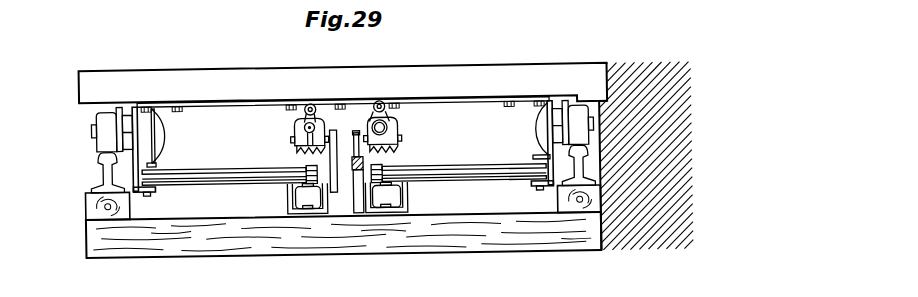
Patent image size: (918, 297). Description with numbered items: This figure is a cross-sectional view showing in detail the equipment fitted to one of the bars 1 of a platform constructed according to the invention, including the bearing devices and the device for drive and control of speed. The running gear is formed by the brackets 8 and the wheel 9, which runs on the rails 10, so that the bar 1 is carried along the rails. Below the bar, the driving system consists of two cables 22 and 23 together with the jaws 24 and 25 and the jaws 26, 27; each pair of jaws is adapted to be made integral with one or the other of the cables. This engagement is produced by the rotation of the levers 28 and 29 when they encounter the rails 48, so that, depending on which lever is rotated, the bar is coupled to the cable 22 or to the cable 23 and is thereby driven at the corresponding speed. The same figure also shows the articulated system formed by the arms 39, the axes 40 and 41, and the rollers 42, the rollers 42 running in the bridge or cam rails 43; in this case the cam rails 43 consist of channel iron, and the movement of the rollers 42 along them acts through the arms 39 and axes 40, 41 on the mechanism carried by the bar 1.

The bar 1 is at (547, 75).
The bracket 8 is at (152, 114).
The wheel 9 is at (103, 125).
The rail 10 is at (100, 158).
The cable 22 is at (308, 124).
The cable 23 is at (395, 129).
The jaw 24 is at (302, 136).
The jaw 25 is at (315, 120).
The jaw 26 is at (374, 104).
The jaw 27 is at (393, 121).
The lever 28 is at (337, 143).
The lever 29 is at (357, 130).
The arm 39 is at (205, 176).
The axis 40 is at (147, 190).
The axis 41 is at (307, 167).
The roller 42 is at (312, 198).
The bridge rail 43 is at (292, 214).
The rail 48 is at (363, 160).